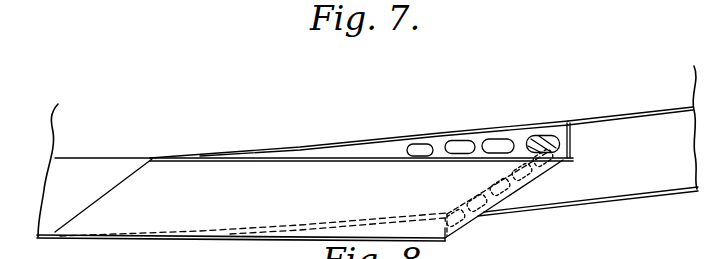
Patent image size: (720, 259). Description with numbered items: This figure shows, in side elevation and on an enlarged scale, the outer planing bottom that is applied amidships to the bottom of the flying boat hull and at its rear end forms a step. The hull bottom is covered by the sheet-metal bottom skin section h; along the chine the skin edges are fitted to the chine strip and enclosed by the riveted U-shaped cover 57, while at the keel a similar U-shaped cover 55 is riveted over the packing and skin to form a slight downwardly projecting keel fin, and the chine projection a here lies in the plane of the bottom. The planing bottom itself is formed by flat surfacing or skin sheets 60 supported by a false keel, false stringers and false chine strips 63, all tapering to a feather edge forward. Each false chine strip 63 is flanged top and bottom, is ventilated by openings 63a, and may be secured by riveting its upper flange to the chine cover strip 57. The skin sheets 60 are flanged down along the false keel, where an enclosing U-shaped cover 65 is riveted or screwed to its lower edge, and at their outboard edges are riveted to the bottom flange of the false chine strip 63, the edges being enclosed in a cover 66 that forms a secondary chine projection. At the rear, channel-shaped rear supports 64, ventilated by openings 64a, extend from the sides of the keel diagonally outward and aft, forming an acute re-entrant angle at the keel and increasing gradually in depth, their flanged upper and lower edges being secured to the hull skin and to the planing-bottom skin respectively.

The chine projection a is at (90, 157).
The surfacing or skin sheets 60 is at (322, 180).
The U-shaped cover 65 is at (257, 238).
The cover 66 is at (301, 158).
The U-shaped cover 57 is at (674, 89).
The skin sections h is at (613, 147).
The false chine strips 63 is at (387, 152).
The openings 63a is at (463, 143).
The channel-shaped rear supports 64 is at (508, 213).
The openings 64a is at (524, 176).
The U-shaped cover 55 is at (623, 200).